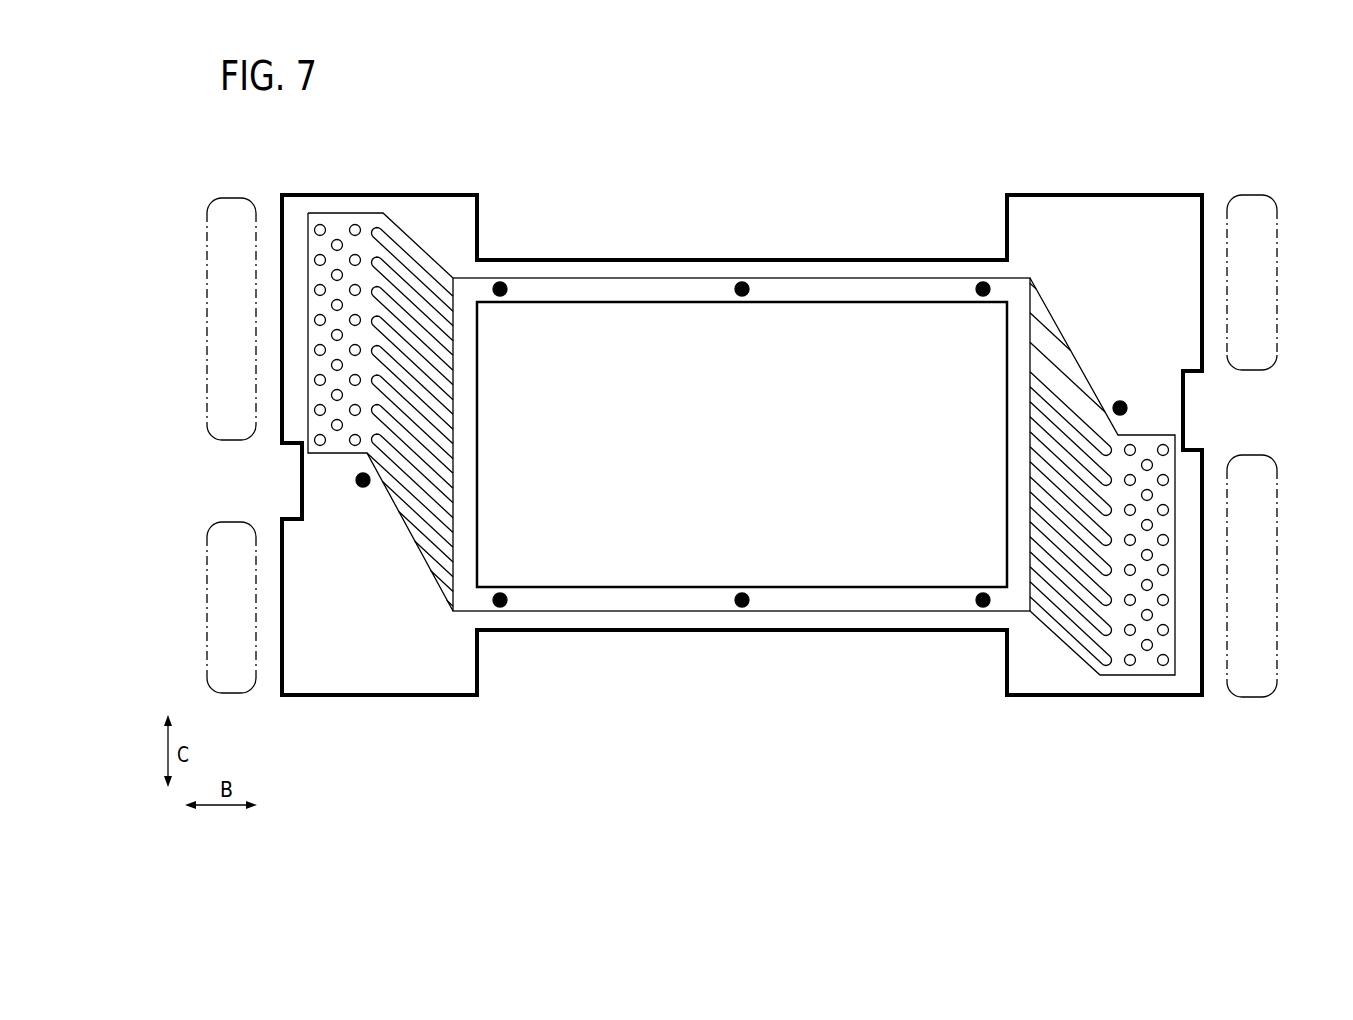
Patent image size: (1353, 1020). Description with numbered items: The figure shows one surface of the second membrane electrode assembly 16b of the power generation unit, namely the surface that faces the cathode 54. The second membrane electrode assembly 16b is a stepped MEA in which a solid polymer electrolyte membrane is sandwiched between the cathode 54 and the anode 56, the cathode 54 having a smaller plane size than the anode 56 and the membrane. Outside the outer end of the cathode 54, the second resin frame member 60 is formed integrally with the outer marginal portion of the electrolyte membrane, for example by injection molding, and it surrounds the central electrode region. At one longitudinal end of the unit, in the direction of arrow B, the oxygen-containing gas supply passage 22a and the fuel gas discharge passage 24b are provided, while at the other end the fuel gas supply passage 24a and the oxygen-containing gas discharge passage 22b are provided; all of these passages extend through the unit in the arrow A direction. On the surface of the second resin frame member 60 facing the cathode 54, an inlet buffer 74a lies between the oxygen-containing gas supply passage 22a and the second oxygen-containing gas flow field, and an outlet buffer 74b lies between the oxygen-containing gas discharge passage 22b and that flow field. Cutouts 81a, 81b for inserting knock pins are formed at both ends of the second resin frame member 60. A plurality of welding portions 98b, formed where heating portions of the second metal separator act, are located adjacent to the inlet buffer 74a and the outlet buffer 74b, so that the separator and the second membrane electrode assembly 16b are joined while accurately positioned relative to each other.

The second membrane electrode assembly 16b is at (350, 138).
The second resin frame member 60 is at (1083, 190).
The cathode 54 is at (601, 318).
The anode 56 is at (675, 318).
The welding portions 98b is at (741, 607).
The inlet buffer 74a is at (403, 210).
The outlet buffer 74b is at (1062, 672).
The cutout 81a is at (300, 486).
The cutout 81b is at (1185, 410).
The oxygen-containing gas supply passage 22a is at (226, 250).
The oxygen-containing gas discharge passage 22b is at (1260, 543).
The fuel gas supply passage 24a is at (1260, 270).
The fuel gas discharge passage 24b is at (226, 596).